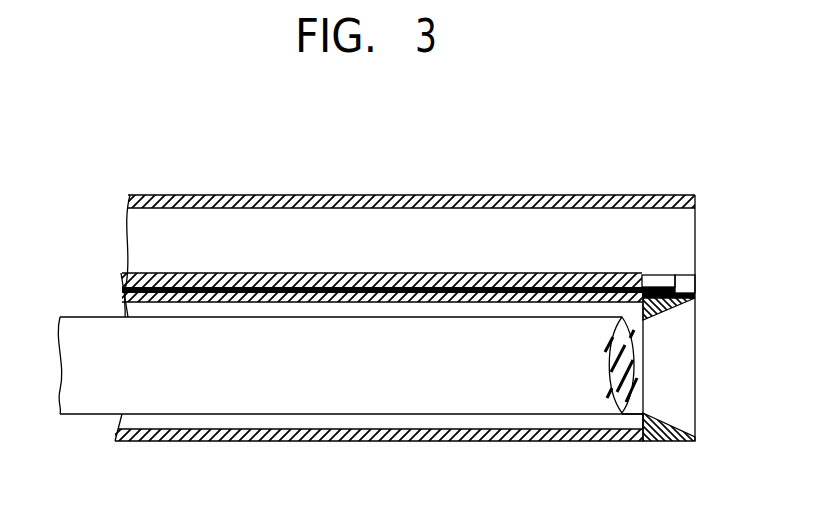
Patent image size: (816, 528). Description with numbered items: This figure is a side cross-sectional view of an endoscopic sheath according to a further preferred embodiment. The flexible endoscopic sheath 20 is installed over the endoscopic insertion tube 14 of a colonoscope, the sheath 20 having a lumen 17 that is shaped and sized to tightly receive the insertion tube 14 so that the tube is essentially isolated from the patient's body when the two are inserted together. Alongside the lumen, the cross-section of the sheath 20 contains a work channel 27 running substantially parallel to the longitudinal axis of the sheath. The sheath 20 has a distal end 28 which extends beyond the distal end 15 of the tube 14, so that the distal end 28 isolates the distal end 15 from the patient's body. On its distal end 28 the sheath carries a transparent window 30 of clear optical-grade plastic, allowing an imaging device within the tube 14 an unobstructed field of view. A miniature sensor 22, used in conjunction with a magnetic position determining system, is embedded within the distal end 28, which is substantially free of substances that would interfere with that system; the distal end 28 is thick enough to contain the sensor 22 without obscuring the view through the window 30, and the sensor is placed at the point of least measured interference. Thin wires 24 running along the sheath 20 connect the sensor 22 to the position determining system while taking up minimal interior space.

The insertion tube 14 is at (97, 417).
The distal end 15 is at (615, 400).
The lumen 17 is at (637, 420).
The flexible endoscopic sheath 20 is at (385, 178).
The sensor 22 is at (693, 290).
The wires 24 is at (657, 287).
The work channel 27 is at (636, 212).
The distal end 28 is at (685, 441).
The transparent window 30 is at (695, 349).